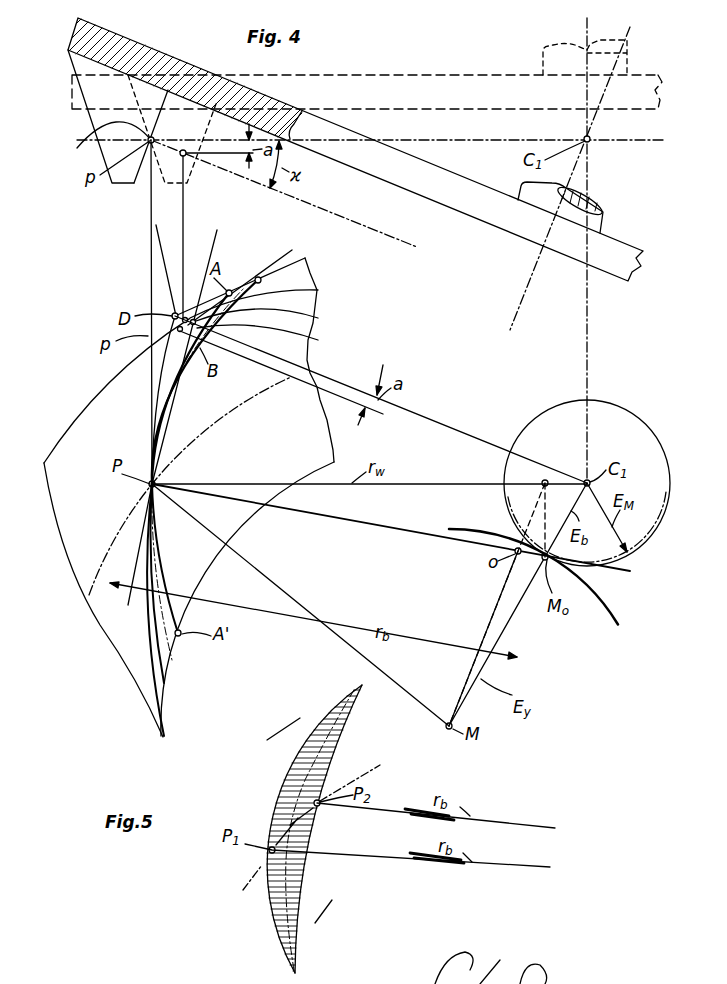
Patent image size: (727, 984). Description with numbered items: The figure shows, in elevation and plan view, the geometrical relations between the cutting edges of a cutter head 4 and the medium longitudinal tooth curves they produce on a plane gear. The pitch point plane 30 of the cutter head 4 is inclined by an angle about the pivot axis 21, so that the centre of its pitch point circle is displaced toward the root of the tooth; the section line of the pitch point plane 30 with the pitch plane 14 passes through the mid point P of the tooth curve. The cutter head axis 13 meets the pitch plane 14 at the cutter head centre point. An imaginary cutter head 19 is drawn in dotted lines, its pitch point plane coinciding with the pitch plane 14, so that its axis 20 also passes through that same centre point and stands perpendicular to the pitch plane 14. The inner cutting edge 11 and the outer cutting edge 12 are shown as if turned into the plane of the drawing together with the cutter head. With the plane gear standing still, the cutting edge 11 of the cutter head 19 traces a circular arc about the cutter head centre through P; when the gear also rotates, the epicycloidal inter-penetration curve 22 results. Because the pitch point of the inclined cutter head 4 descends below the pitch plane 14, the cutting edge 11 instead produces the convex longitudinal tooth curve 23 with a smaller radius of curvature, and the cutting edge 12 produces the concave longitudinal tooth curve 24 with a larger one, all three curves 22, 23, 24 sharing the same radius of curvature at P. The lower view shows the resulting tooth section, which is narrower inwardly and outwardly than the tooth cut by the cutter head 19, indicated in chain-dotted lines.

In FIG. 4, the cutter head 4 is at (478, 208).
In FIG. 4, the inner cutting edge 11 is at (151, 140).
In FIG. 4, the outer cutting edge 12 is at (163, 262).
In FIG. 4, the cutter head axis 13 is at (519, 307).
In FIG. 4, the pitch plane 14 is at (634, 141).
In FIG. 4, the imaginary cutter head 19 is at (407, 78).
In FIG. 4, the axis 20 is at (583, 33).
In FIG. 4, the pivot axis 21 is at (151, 140).
In FIG. 4, the inter-penetration curve 22 is at (318, 318).
In FIG. 5, the inter-penetration curve 22 is at (293, 722).
In FIG. 4, the longitudinal tooth curve 23 is at (318, 340).
In FIG. 5, the longitudinal tooth curve 23 is at (302, 718).
In FIG. 4, the longitudinal tooth curve 24 is at (318, 290).
In FIG. 5, the longitudinal tooth curve 24 is at (356, 690).
In FIG. 4, the pitch point plane 30 is at (378, 237).